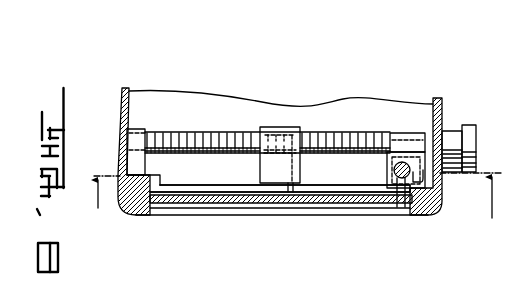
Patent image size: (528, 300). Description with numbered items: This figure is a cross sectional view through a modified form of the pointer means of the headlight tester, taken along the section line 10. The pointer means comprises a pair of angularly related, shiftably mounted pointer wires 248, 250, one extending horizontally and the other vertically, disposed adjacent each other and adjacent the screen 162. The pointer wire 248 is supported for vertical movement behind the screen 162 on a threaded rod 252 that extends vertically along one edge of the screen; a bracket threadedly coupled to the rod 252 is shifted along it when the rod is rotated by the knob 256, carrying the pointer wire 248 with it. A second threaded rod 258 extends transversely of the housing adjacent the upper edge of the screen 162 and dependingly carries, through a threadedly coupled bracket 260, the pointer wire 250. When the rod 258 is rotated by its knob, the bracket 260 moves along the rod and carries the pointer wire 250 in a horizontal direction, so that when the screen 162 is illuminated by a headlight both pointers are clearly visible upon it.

The section line 10- 10 is at (296, 209).
The screen 162 is at (303, 204).
The pointer wire 248 is at (281, 194).
The pointer wire 250 is at (246, 193).
The threaded rod 252 is at (357, 146).
The knob 256 is at (471, 138).
The second threaded rod 258 is at (399, 180).
The bracket 260 is at (394, 170).